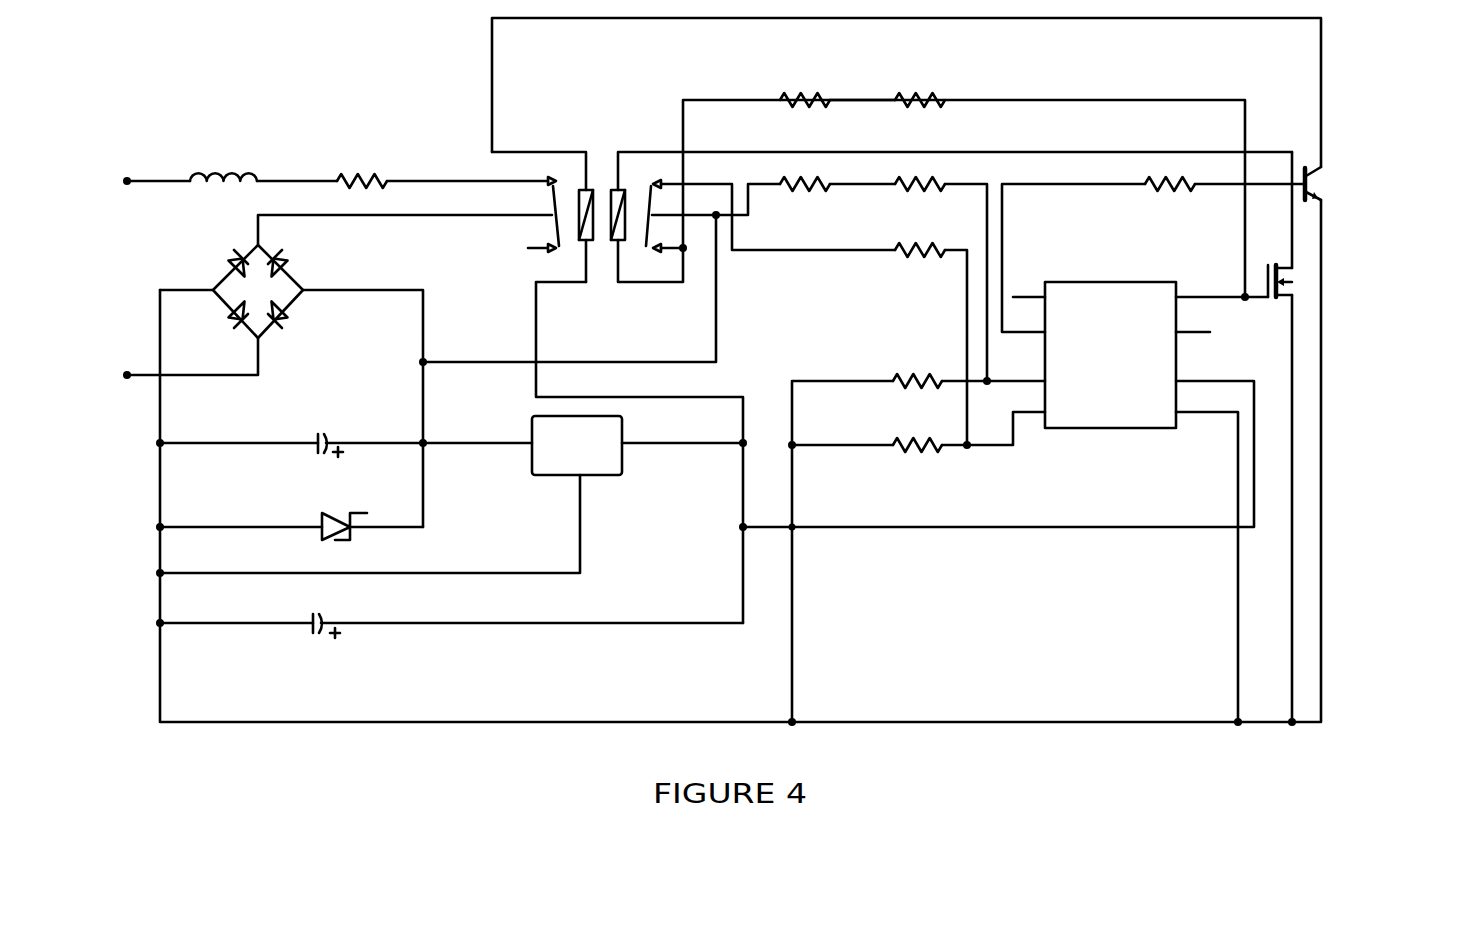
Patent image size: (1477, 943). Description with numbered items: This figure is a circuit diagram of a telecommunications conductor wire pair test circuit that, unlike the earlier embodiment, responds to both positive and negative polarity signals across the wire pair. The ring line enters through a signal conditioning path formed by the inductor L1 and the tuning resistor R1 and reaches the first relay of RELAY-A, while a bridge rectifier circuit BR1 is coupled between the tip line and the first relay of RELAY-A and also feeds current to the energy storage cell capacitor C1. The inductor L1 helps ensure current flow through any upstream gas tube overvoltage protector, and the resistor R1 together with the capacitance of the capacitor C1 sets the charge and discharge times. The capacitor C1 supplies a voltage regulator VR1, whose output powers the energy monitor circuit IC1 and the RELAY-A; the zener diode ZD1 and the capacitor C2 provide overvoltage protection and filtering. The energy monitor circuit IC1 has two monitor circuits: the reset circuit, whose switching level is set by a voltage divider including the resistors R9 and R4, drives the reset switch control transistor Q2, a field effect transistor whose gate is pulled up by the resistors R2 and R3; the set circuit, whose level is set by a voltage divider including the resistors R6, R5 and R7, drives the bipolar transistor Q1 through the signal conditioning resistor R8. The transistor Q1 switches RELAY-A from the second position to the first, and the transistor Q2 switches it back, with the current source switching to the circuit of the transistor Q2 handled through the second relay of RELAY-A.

The inductor L1 is at (223, 180).
The tuning resistor R1 is at (357, 181).
The bridge rectifier circuit BR1 is at (273, 291).
The energy storage cell capacitor C1 is at (345, 446).
The zener diode ZD1 is at (332, 532).
The capacitor C2 is at (346, 625).
The voltage regulator VR1 is at (622, 476).
The relay RELAY-A is at (594, 219).
The pull up resistor R2 is at (805, 103).
The pull up resistor R3 is at (920, 103).
The signal conditioning resistor R8 is at (805, 185).
The voltage divider resistor R9 is at (920, 185).
The voltage divider resistor R5 is at (920, 251).
The voltage divider resistor R4 is at (917, 383).
The voltage divider resistor R6 is at (917, 448).
The voltage divider resistor R7 is at (1170, 185).
The energy monitor circuit IC1 is at (1110, 356).
The reset switch control transistor Q2 is at (1252, 289).
The set switch transistor Q1 is at (1386, 178).